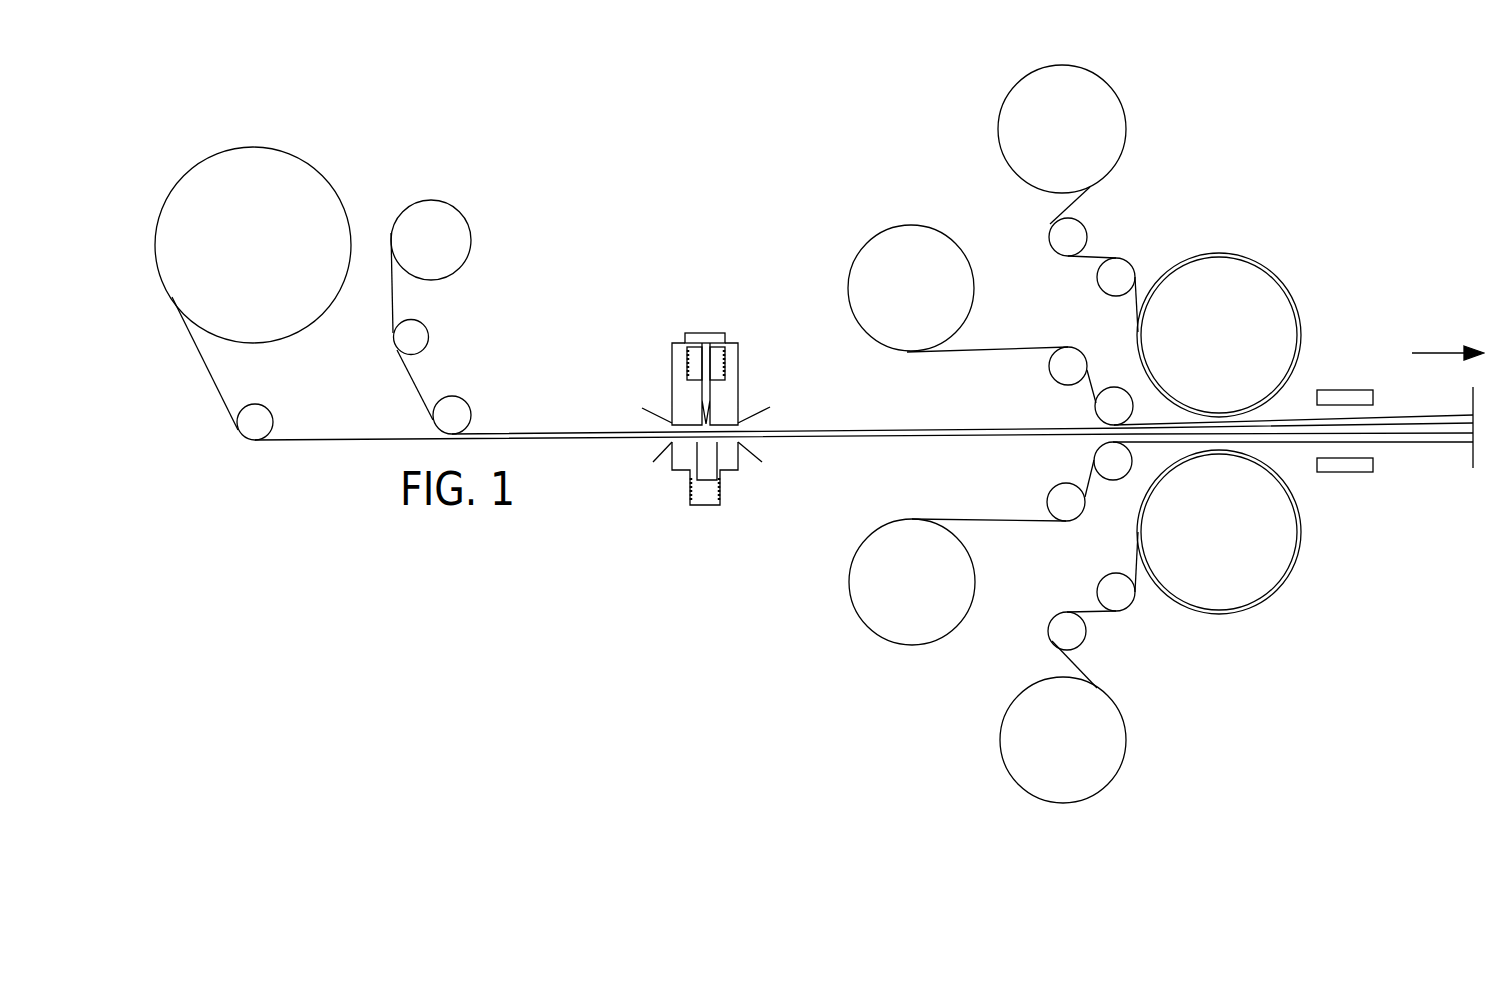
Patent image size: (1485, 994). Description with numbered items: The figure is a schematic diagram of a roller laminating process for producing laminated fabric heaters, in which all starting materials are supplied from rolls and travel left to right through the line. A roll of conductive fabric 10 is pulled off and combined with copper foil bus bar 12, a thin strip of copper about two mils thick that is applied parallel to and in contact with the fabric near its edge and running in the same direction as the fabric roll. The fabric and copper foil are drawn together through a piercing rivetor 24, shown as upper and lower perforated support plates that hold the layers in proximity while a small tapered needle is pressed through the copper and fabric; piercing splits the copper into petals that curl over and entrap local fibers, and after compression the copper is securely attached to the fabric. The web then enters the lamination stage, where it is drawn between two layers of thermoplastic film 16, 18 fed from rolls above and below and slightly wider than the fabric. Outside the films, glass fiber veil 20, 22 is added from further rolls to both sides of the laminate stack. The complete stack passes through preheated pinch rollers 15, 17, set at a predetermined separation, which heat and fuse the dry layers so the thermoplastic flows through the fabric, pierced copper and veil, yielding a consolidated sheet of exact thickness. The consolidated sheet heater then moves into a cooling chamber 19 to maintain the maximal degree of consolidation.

The conductive fabric 10 is at (243, 147).
The copper foil bus bar 12 is at (462, 213).
The piercing rivetor 24 is at (722, 322).
The thermoplastic film 16 is at (885, 227).
The thermoplastic film 18 is at (890, 647).
The glass fiber veil 20 is at (1052, 65).
The glass fiber veil 22 is at (1063, 803).
The pinch roller 15 is at (1242, 253).
The pinch roller 17 is at (1243, 613).
The cooling chamber 19 is at (1350, 390).